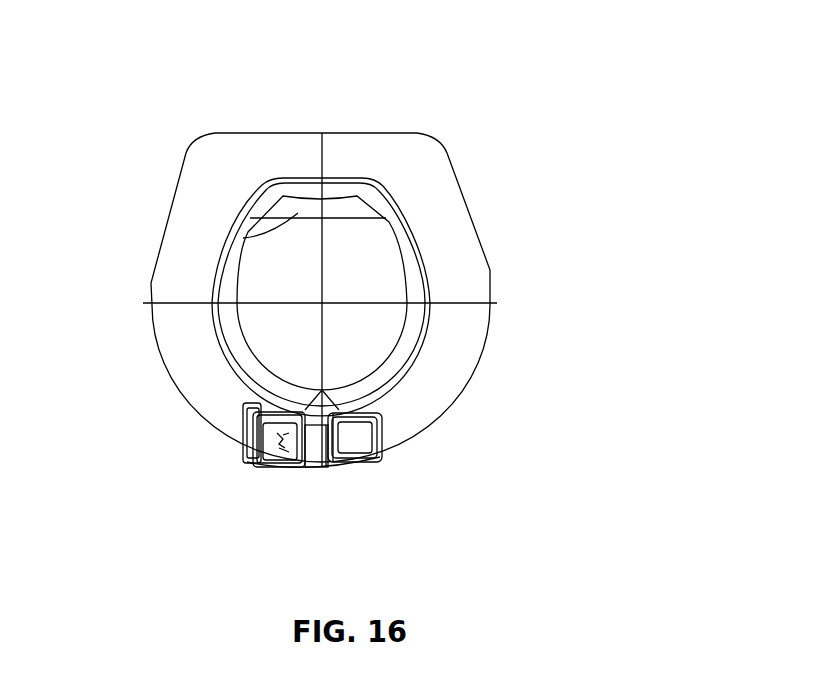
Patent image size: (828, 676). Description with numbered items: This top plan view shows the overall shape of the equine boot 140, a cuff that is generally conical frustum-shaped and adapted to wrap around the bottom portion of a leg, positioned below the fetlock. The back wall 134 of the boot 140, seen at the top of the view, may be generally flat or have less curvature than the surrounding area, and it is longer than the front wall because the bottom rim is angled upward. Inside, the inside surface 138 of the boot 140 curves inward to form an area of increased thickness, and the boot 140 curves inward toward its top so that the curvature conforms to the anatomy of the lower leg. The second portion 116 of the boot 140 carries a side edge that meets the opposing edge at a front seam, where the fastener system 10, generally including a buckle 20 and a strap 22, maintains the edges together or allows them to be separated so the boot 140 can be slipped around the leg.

The fastener system 10 is at (288, 480).
The buckle 20 is at (260, 458).
The strap 22 is at (368, 457).
The second portion 116 is at (435, 420).
The back wall 134 is at (297, 133).
The inside surface 138 is at (240, 340).
The equine boot 140 is at (530, 338).